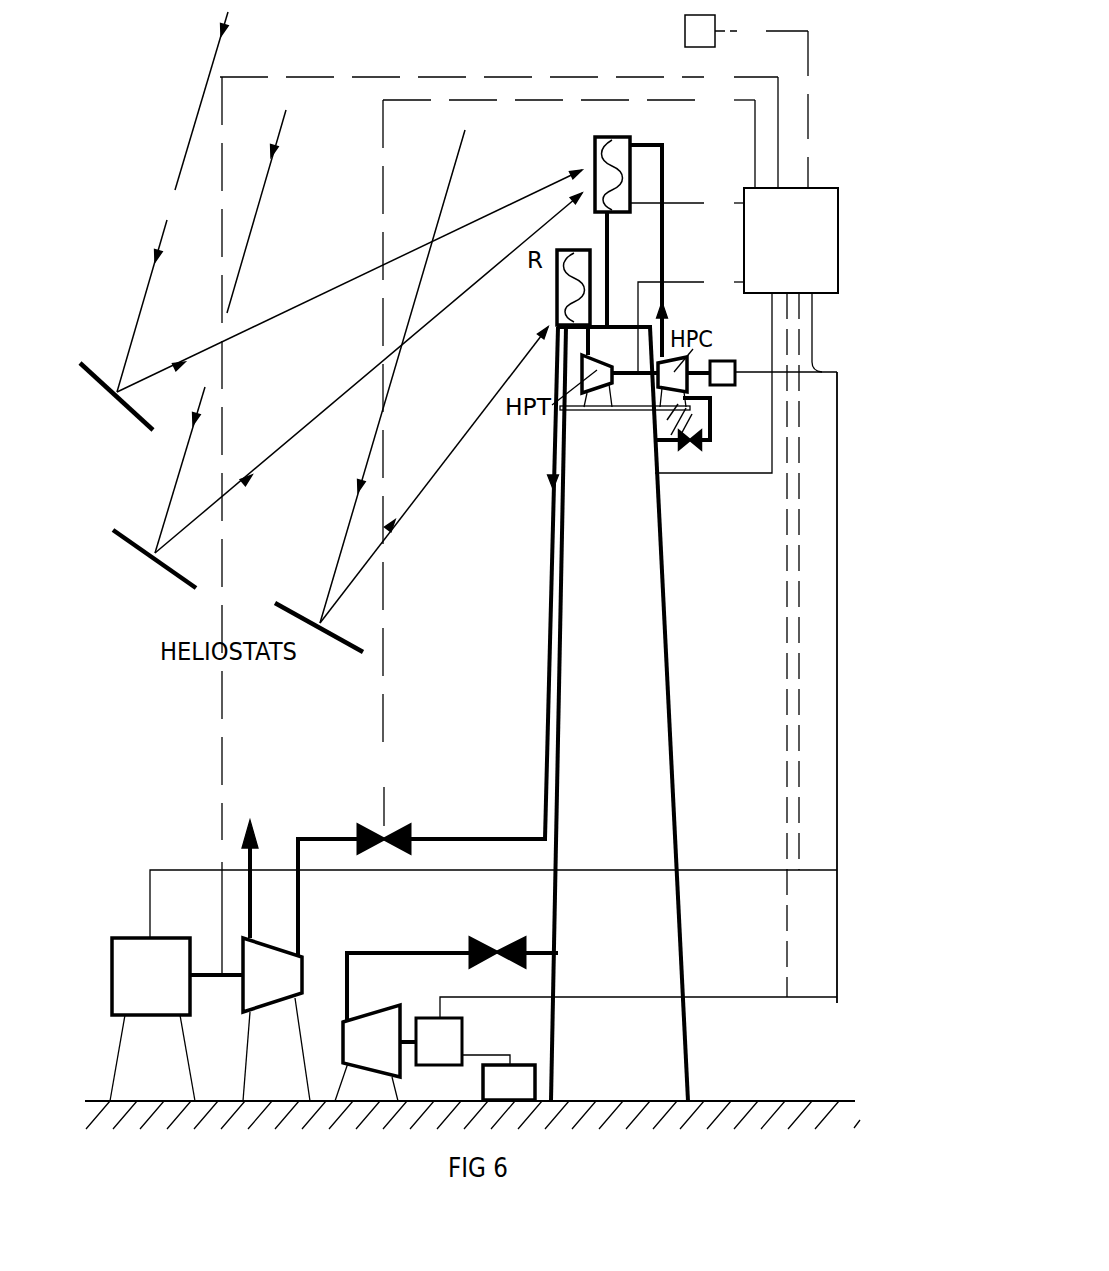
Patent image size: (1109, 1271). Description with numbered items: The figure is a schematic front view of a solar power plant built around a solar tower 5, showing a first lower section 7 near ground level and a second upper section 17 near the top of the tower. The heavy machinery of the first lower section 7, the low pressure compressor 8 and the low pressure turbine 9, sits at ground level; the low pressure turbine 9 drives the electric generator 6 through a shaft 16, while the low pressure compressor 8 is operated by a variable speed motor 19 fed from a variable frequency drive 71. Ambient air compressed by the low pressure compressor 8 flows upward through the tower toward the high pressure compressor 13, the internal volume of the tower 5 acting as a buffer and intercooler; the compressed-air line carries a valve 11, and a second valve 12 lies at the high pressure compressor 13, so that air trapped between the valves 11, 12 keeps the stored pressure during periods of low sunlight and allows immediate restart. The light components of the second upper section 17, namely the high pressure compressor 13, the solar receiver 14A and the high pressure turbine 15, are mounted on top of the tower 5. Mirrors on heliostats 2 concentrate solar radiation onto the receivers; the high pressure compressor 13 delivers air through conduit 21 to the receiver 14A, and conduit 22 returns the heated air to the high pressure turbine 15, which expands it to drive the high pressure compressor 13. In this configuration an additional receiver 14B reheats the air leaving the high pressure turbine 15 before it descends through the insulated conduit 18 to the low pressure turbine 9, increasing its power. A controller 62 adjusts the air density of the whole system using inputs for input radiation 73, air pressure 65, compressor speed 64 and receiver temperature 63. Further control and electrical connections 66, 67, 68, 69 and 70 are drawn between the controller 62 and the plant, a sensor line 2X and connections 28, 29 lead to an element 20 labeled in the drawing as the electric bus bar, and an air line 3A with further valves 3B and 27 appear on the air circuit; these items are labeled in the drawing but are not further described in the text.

The heliostats 2 is at (150, 556).
The sensor signal line 2X is at (814, 370).
The valve 3A is at (400, 953).
The valve 3B is at (707, 438).
The solar tower 5 is at (665, 572).
The electric generator 6 is at (112, 938).
The first lower section 7 is at (792, 1101).
The low pressure compressor 8 is at (370, 1012).
The low pressure turbine 9 is at (261, 941).
The valve 11 is at (490, 940).
The valve 12 is at (686, 422).
The high pressure compressor 13 is at (715, 362).
The solar receiver 14A is at (602, 137).
The additional receiver 14B is at (579, 240).
The high pressure turbine 15 is at (607, 372).
The shaft 16 is at (197, 975).
The second upper section 17 is at (609, 411).
The insulated conduit 18 is at (470, 838).
The motor 19 is at (462, 1036).
The electric bus bar 20 is at (838, 446).
The conduit 21 is at (665, 195).
The conduit 22 is at (609, 286).
The valve 27 is at (400, 826).
The electrical connection 28 is at (793, 996).
The electrical connection 29 is at (793, 870).
The controller 62 is at (838, 268).
The receiver temperature input 63 is at (687, 203).
The HPC speed input 64 is at (691, 320).
The air pressure input 65 is at (713, 384).
The signal line 66 is at (492, 519).
The signal line 67 is at (788, 645).
The signal line 68 is at (800, 581).
The signal line 69 is at (562, 456).
The signal line 70 is at (813, 332).
The variable frequency drive 71 is at (526, 1065).
The input radiation 73 is at (746, 101).